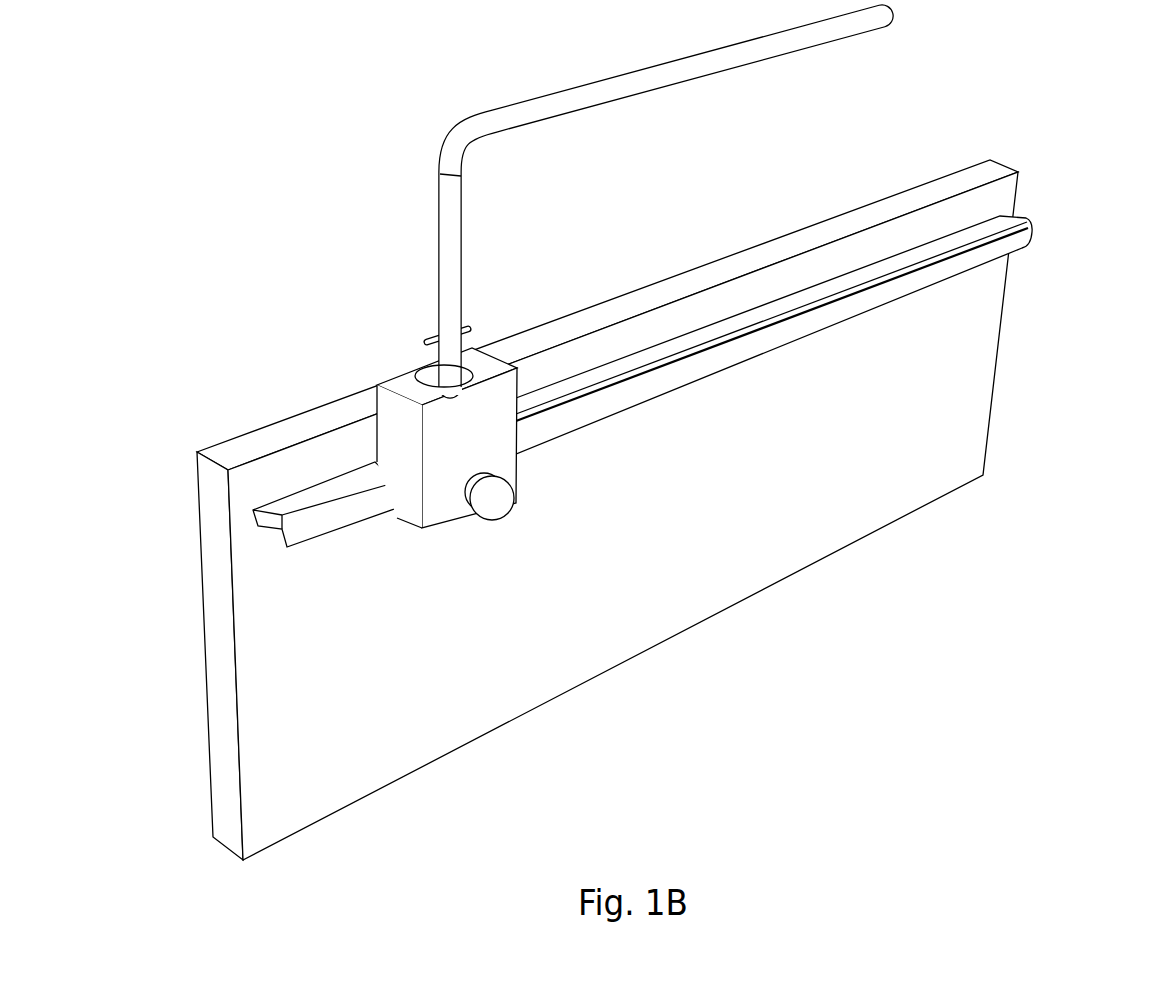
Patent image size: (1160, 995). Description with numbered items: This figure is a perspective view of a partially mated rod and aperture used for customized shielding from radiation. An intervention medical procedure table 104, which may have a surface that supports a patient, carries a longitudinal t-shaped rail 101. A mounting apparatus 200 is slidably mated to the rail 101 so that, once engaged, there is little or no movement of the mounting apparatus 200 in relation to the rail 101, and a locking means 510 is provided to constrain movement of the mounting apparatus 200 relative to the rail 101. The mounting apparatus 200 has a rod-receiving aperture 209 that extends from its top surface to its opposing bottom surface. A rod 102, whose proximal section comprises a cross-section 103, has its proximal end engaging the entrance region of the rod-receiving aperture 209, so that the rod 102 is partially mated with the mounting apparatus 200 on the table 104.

The longitudinal t-shaped rail 101 is at (1031, 229).
The rod 102 is at (896, 17).
The cross-section 103 is at (432, 333).
The intervention medical procedure table 104 is at (993, 402).
The mounting apparatus 200 is at (506, 440).
The rod-receiving aperture 209 is at (416, 372).
The locking means 510 is at (504, 507).